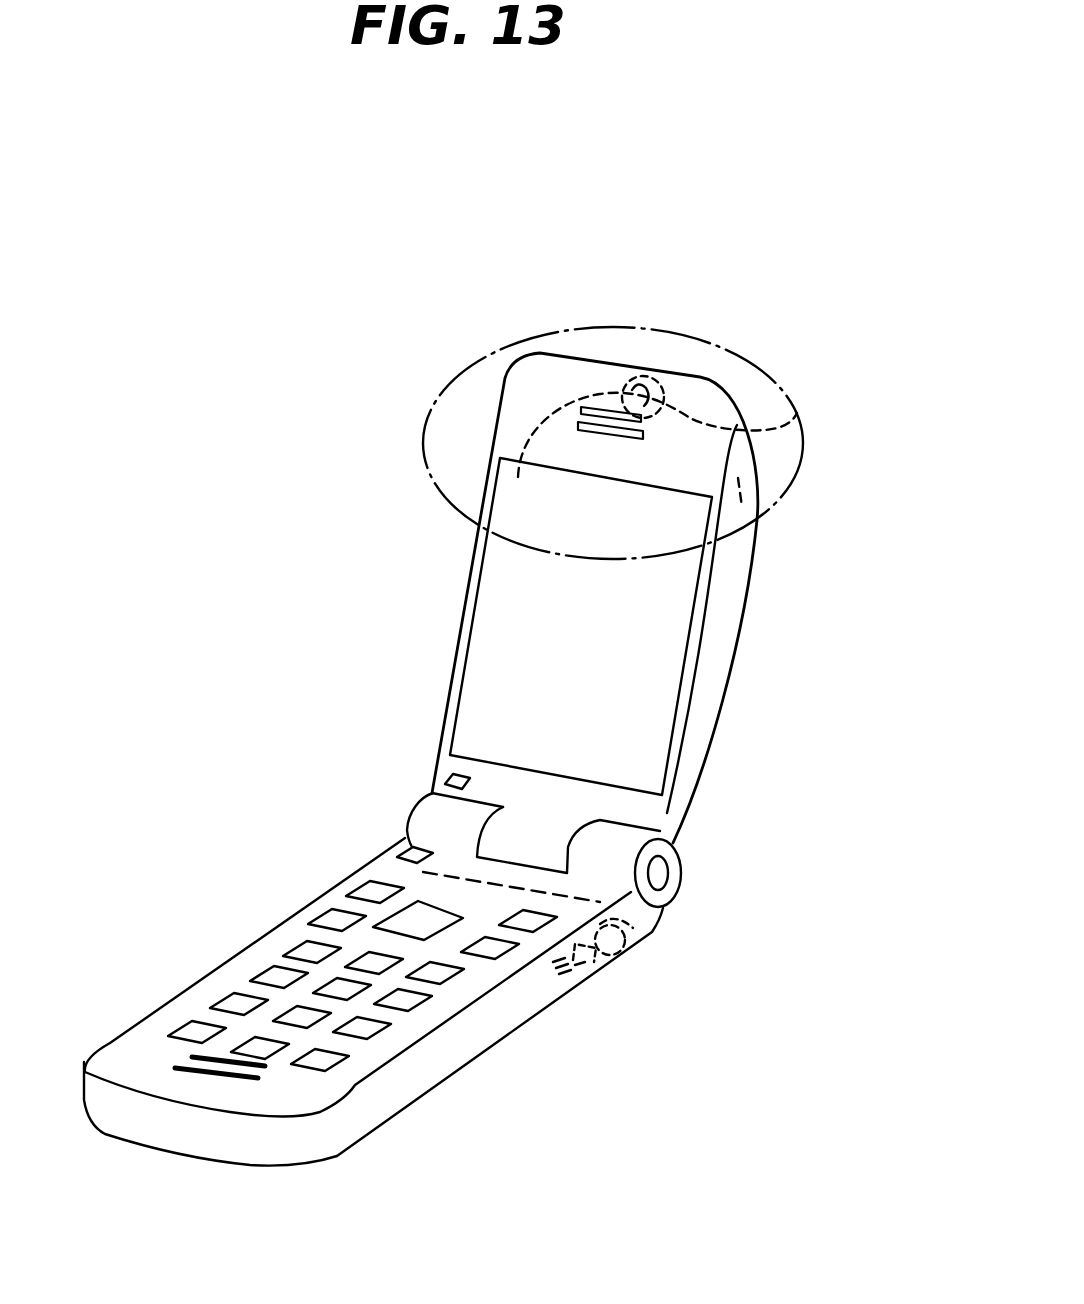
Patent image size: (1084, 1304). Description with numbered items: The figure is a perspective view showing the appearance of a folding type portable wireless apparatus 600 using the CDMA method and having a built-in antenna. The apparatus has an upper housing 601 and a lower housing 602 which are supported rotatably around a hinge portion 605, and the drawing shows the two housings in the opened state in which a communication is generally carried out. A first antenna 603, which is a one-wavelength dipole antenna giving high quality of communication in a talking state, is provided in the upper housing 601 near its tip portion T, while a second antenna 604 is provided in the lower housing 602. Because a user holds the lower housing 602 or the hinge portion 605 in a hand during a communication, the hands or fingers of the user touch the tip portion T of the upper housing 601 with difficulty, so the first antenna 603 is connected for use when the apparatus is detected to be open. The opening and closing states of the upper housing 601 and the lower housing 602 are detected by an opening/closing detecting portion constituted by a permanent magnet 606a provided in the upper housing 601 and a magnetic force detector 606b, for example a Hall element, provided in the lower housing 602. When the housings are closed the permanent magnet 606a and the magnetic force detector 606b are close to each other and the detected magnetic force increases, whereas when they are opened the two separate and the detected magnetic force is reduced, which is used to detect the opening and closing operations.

The portable wireless apparatus 600 is at (363, 302).
The upper housing 601 is at (722, 630).
The lower housing 602 is at (490, 1020).
The first antenna 603 is at (797, 413).
The second antenna 604 is at (652, 936).
The hinge portion 605 is at (660, 872).
The permanent magnet 606a is at (444, 778).
The magnetic force detector 606b is at (415, 847).
The tip portion T is at (422, 430).